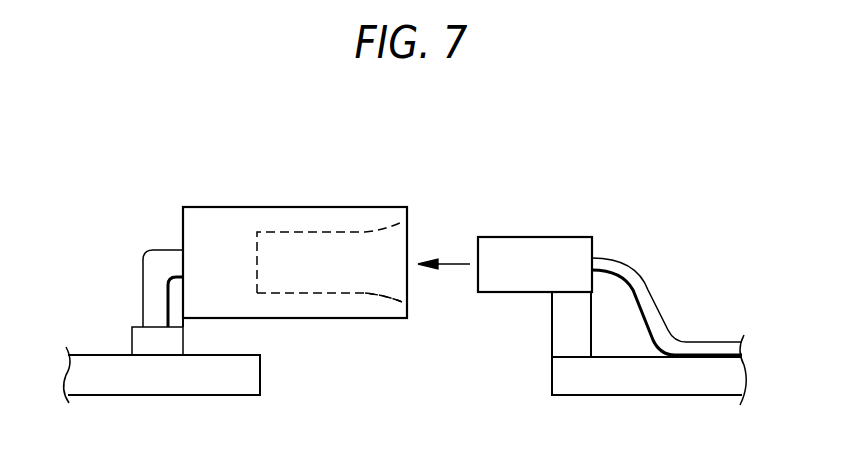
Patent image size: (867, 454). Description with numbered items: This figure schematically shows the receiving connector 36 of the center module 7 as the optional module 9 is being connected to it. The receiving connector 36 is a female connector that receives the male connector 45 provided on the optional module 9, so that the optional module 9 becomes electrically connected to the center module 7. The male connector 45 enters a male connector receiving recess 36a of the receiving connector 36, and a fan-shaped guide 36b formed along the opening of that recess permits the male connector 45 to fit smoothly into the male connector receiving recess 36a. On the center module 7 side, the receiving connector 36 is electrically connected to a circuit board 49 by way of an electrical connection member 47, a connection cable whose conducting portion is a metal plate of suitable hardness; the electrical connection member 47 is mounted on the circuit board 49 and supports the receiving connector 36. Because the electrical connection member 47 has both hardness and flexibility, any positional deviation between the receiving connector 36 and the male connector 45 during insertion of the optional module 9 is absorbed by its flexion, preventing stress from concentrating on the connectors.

The center module 7 is at (220, 167).
The optional module 9 is at (612, 182).
The receiving connector 36 is at (310, 207).
The male connector receiving recess 36a is at (316, 293).
The fan-shaped guide 36b is at (399, 300).
The male connector 45 is at (538, 237).
The electrical connection member 47 is at (157, 251).
The circuit board 49 is at (180, 380).